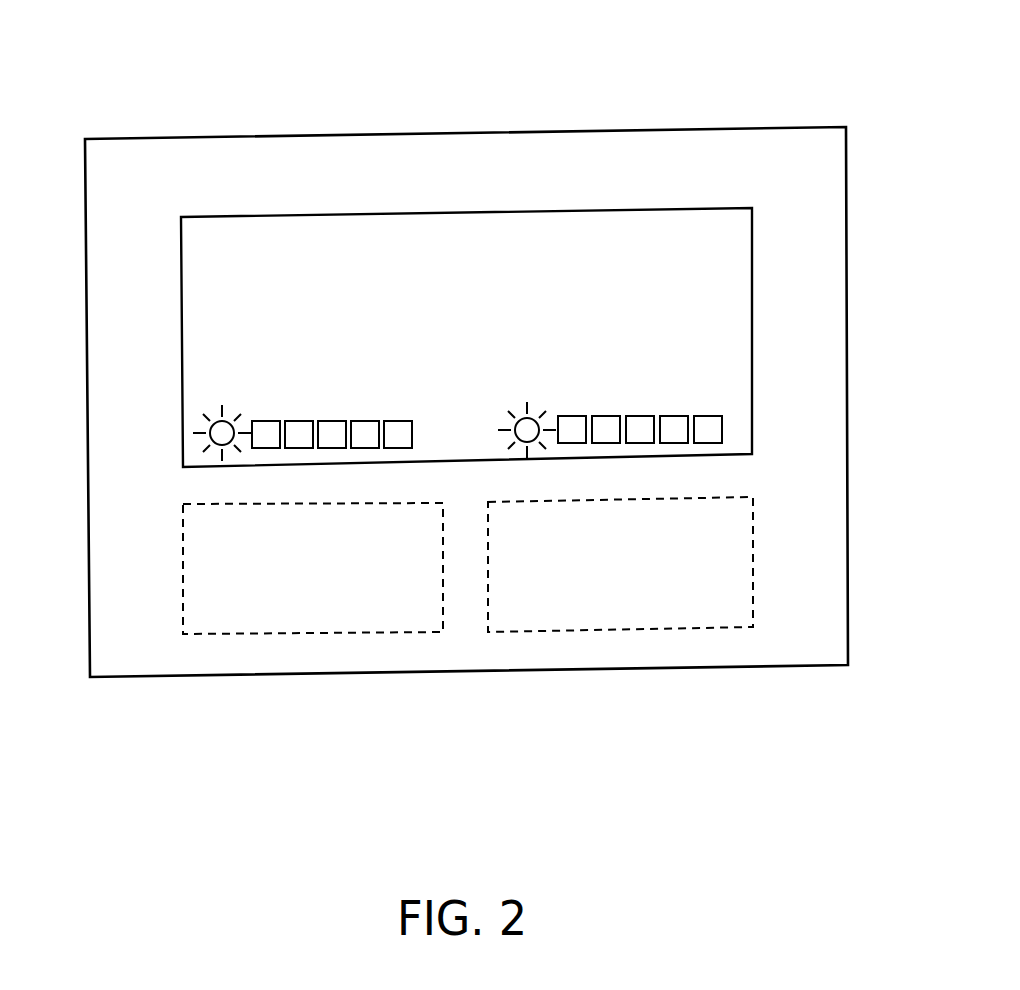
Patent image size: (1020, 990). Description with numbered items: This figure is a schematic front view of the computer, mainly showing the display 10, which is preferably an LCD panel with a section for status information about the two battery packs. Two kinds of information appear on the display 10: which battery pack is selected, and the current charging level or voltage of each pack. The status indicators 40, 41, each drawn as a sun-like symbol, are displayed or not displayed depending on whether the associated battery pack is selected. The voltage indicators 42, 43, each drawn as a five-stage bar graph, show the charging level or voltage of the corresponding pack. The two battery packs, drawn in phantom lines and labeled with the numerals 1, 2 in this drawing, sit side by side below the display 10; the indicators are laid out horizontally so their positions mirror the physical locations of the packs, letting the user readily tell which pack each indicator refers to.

The display 10 is at (634, 182).
The status indicator 40 is at (193, 422).
The voltage indicator 42 is at (300, 415).
The status indicator 41 is at (537, 402).
The voltage indicator 43 is at (737, 392).
The first battery pack 1 is at (295, 613).
The second battery pack 2 is at (605, 620).